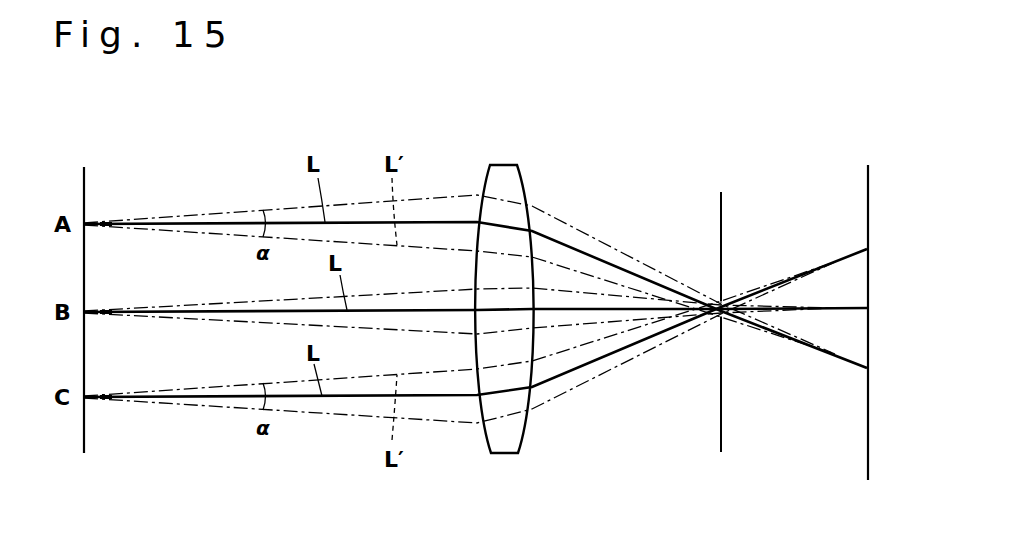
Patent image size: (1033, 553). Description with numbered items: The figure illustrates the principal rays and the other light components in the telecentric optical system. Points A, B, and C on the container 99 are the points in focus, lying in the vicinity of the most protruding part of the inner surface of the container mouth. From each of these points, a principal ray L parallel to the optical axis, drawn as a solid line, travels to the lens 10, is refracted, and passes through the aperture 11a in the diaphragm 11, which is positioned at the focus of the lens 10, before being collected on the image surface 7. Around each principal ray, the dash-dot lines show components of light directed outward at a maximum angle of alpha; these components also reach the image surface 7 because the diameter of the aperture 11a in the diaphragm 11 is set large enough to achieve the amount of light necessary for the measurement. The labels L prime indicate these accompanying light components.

The container 99 is at (85, 440).
The lens 10 is at (501, 455).
The diaphragm 11 is at (720, 435).
The aperture 11a is at (722, 296).
The image surface 7 is at (866, 452).